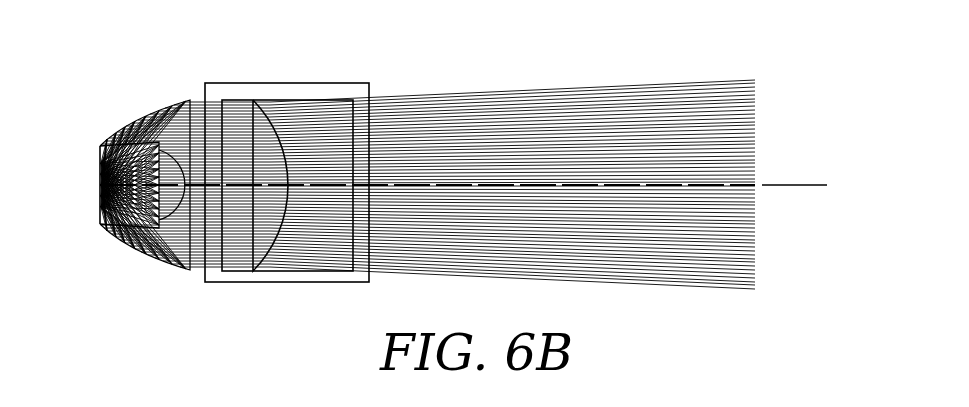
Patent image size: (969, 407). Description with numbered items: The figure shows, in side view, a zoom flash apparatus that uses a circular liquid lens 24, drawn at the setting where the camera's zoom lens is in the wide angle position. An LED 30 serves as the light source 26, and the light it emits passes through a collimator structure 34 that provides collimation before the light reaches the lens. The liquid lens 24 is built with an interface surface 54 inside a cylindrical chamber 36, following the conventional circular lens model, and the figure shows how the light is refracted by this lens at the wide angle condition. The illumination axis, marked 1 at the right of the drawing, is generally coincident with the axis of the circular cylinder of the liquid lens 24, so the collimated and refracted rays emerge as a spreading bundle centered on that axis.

The optical axis 1 is at (784, 184).
The liquid lens 24 is at (233, 99).
The light source 26 is at (100, 185).
The LED 30 is at (99, 187).
The collimator structure 34 is at (166, 108).
The cylindrical chamber 36 is at (348, 83).
The interface surface 54 is at (272, 110).